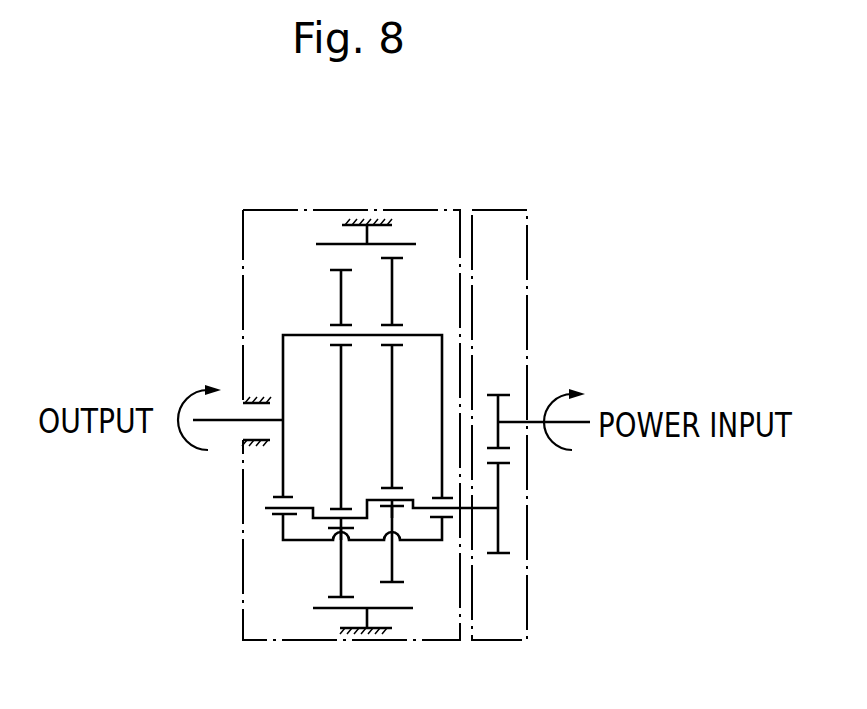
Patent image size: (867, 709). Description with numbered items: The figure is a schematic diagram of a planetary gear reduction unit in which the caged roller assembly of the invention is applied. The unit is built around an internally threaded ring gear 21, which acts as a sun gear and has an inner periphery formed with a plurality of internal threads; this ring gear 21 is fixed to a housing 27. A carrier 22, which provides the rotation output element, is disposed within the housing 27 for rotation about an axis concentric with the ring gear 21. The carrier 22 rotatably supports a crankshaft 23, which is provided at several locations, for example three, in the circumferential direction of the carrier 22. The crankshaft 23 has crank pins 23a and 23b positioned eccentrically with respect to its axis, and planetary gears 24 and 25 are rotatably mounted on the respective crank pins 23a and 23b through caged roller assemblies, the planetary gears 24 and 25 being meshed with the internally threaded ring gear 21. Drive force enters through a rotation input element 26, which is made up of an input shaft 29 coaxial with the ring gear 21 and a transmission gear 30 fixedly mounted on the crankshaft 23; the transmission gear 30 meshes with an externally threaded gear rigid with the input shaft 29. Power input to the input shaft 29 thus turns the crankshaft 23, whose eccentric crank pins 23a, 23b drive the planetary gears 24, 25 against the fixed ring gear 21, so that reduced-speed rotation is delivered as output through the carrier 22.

The internally threaded ring gear 21 is at (329, 610).
The carrier 22 is at (283, 467).
The crankshaft 23 is at (483, 506).
The crank pin 23a is at (323, 520).
The crank pin 23b is at (407, 502).
The planetary gear 24 is at (342, 575).
The planetary gear 25 is at (393, 567).
The rotation input element 26 is at (527, 583).
The housing 27 is at (359, 221).
The input shaft 29 is at (572, 420).
The transmission gear 30 is at (498, 532).